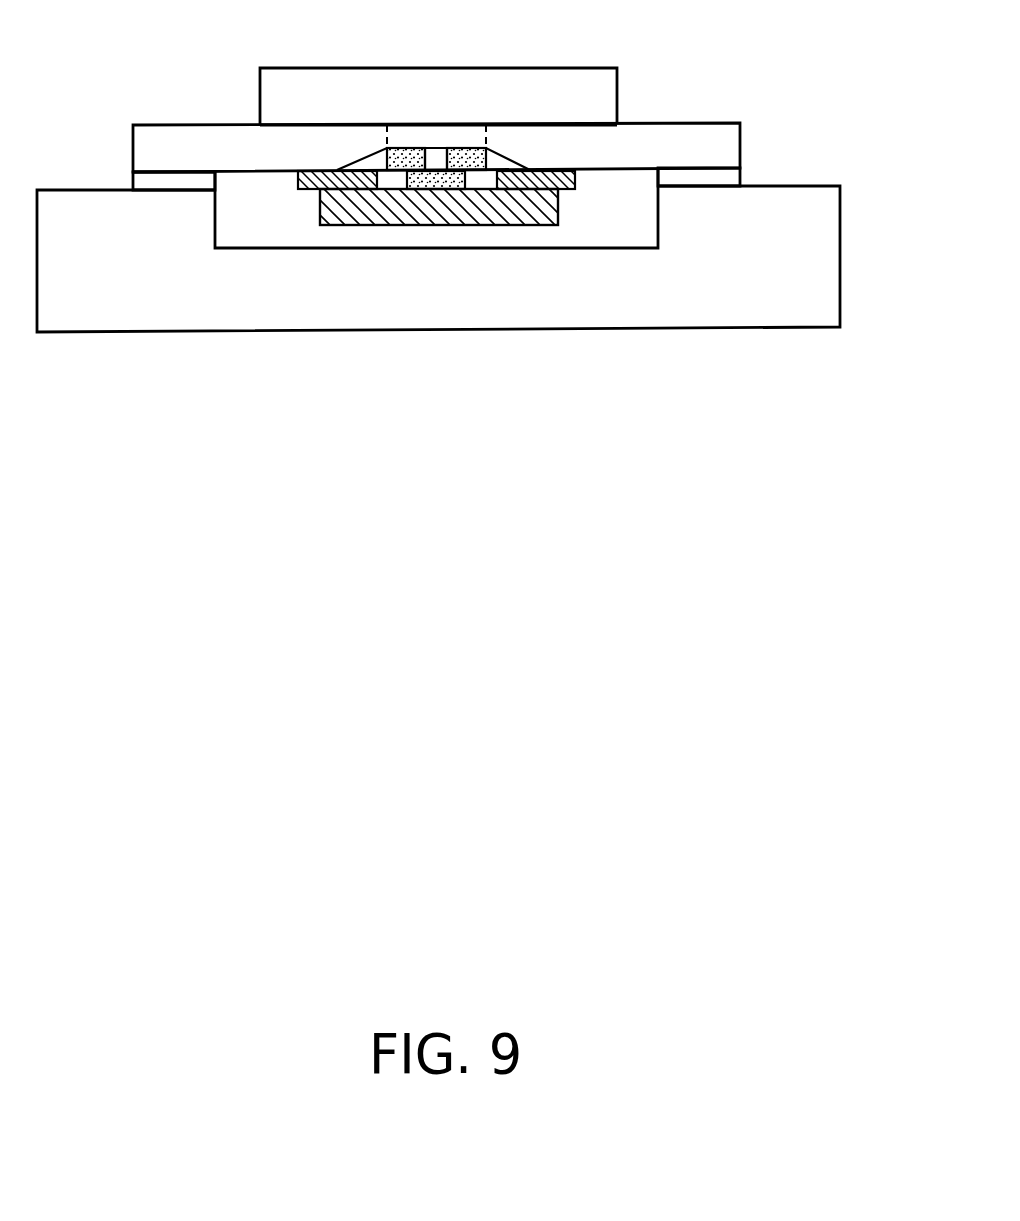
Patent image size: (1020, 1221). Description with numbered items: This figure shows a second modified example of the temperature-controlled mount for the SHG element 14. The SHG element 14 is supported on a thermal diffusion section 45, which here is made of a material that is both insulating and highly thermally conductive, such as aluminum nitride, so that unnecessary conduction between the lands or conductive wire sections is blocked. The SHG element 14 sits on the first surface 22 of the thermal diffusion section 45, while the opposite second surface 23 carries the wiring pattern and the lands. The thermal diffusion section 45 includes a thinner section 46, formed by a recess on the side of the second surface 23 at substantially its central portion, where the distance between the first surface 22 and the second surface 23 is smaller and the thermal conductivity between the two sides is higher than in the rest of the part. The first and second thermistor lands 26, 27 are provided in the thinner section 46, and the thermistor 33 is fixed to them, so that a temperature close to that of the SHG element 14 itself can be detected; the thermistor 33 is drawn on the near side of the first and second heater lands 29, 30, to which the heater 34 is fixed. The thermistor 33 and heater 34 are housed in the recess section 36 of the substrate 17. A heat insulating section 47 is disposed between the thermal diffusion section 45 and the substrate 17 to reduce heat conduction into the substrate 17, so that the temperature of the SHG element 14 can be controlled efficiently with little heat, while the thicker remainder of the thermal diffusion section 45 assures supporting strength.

The SHG element 14 is at (607, 92).
The substrate 17 is at (827, 256).
The first surface 22 is at (288, 124).
The second surface 23 is at (245, 173).
The first thermistor land 26 is at (487, 171).
The second thermistor land 27 is at (392, 171).
The first heater land 29 is at (578, 171).
The second heater land 30 is at (300, 189).
The thermistor 33 is at (439, 189).
The heater 34 is at (546, 189).
The recess section 36 is at (655, 231).
The thermal diffusion section 45 is at (730, 142).
The thinner section 46 is at (472, 128).
The heat insulating section 47 is at (138, 182).